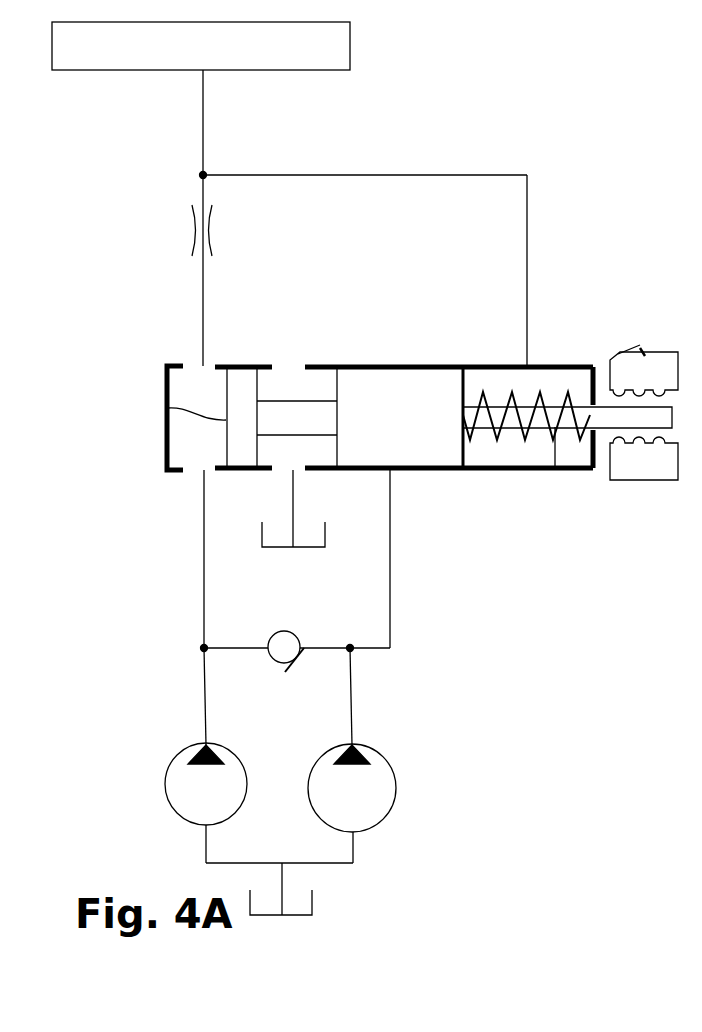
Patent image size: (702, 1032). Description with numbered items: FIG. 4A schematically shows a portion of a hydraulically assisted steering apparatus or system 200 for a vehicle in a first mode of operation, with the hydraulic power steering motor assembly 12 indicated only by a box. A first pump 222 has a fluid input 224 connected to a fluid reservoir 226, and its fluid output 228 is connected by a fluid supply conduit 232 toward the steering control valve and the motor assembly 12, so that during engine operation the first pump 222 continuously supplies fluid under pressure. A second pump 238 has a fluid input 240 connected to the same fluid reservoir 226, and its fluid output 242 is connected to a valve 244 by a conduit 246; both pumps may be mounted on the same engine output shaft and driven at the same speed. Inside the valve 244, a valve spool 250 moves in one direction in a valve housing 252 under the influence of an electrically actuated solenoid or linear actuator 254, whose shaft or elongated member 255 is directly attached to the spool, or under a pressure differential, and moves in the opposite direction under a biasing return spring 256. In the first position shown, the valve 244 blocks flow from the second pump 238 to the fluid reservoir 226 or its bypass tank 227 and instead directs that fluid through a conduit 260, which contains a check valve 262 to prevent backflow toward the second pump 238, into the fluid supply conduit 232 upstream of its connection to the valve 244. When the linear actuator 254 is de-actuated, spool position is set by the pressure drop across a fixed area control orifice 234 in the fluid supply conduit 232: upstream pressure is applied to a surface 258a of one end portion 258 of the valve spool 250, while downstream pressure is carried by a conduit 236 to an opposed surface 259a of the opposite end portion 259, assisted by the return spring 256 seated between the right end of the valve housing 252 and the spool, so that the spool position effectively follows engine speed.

The hydraulic power steering motor assembly 12 is at (352, 48).
The hydraulically assisted steering apparatus or system 200 is at (530, 116).
The first pump 222 is at (186, 790).
The fluid input 224 is at (213, 825).
The fluid reservoir 226 is at (312, 900).
The bypass tank 227 is at (325, 530).
The fluid output 228 is at (205, 742).
The fluid supply conduit 232 is at (204, 128).
The fixed area control orifice 234 is at (210, 230).
The conduit 236 is at (402, 176).
The second pump 238 is at (382, 790).
The fluid input 240 is at (358, 835).
The fluid output 242 is at (352, 742).
The valve 244 is at (457, 368).
The conduit 246 is at (390, 620).
The valve spool 250 is at (380, 390).
The valve housing 252 is at (266, 362).
The electrically actuated solenoid or linear actuator 254 is at (622, 352).
The shaft or elongated member 255 is at (607, 418).
The biasing return spring 256 is at (560, 470).
The one end portion 258 is at (235, 472).
The surface 258a is at (168, 408).
The opposite end portion 259 is at (421, 470).
The opposed surface 259a is at (487, 470).
The conduit 260 is at (322, 655).
The check valve 262 is at (270, 633).